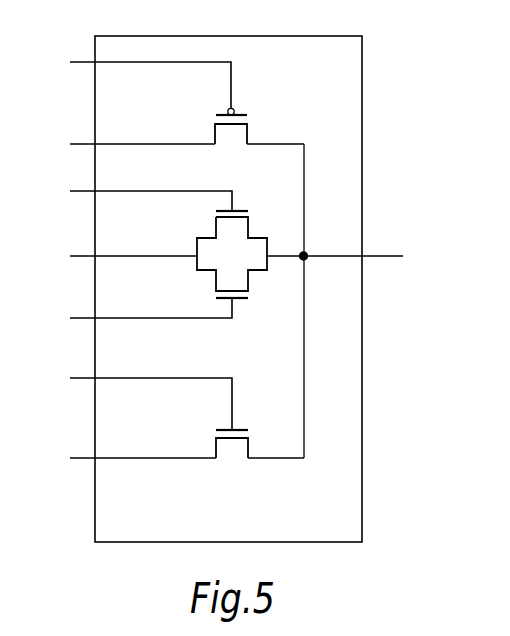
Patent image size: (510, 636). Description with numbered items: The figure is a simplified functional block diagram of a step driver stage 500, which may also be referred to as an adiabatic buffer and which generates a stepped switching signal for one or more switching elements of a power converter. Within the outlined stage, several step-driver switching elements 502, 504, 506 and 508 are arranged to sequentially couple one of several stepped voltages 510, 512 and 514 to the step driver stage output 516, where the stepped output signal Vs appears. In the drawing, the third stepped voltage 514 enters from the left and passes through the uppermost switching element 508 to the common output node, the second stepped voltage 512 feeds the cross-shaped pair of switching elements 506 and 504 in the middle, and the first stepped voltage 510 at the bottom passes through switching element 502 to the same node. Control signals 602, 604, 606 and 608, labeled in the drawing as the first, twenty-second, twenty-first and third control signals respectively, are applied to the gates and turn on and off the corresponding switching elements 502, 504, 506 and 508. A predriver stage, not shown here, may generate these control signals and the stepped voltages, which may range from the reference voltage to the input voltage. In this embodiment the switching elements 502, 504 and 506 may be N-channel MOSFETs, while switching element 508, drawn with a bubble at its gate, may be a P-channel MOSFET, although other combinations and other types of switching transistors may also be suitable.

The step driver stage 500 is at (358, 62).
The step-driver switching element 502 is at (231, 444).
The step-driver switching element 504 is at (236, 302).
The step-driver switching element 506 is at (236, 208).
The step-driver switching element 508 is at (232, 132).
The stepped voltage 510 is at (82, 460).
The stepped voltage 512 is at (84, 255).
The stepped voltage 514 is at (82, 142).
The step driver stage output 516 is at (383, 256).
The control signal 602 is at (82, 380).
The control signal 604 is at (84, 317).
The control signal 606 is at (84, 190).
The control signal 608 is at (82, 60).